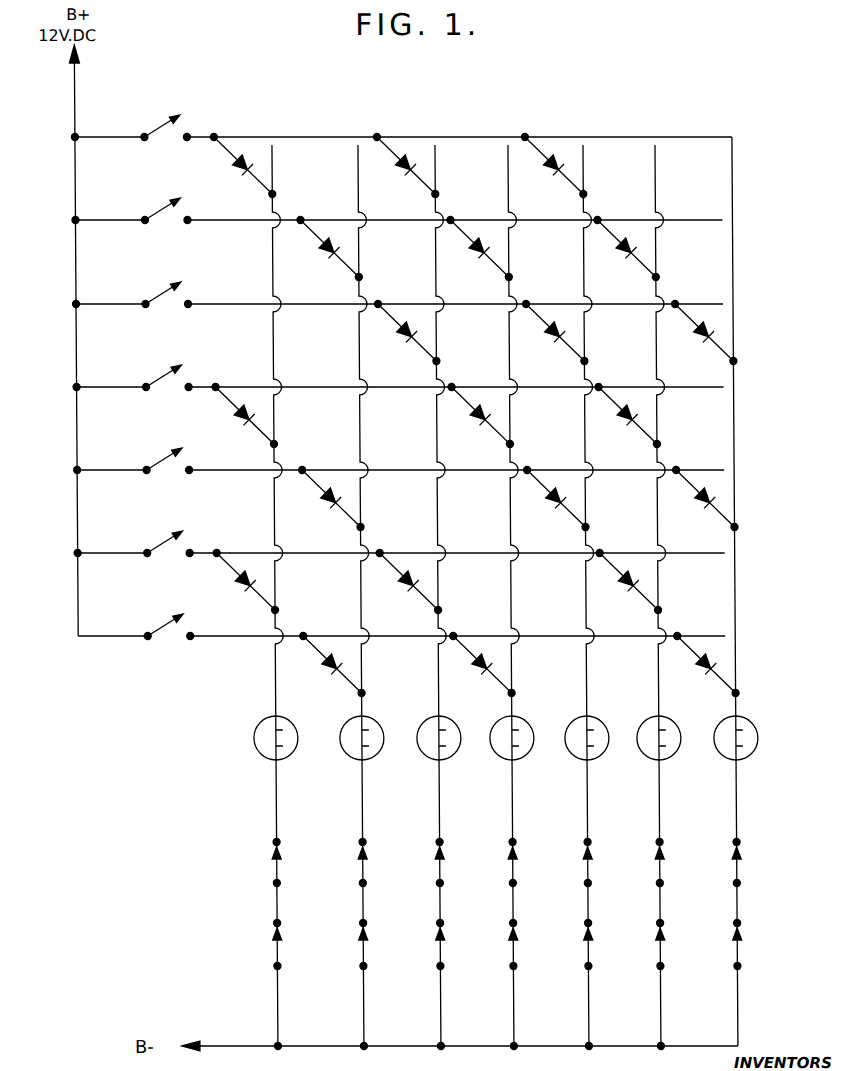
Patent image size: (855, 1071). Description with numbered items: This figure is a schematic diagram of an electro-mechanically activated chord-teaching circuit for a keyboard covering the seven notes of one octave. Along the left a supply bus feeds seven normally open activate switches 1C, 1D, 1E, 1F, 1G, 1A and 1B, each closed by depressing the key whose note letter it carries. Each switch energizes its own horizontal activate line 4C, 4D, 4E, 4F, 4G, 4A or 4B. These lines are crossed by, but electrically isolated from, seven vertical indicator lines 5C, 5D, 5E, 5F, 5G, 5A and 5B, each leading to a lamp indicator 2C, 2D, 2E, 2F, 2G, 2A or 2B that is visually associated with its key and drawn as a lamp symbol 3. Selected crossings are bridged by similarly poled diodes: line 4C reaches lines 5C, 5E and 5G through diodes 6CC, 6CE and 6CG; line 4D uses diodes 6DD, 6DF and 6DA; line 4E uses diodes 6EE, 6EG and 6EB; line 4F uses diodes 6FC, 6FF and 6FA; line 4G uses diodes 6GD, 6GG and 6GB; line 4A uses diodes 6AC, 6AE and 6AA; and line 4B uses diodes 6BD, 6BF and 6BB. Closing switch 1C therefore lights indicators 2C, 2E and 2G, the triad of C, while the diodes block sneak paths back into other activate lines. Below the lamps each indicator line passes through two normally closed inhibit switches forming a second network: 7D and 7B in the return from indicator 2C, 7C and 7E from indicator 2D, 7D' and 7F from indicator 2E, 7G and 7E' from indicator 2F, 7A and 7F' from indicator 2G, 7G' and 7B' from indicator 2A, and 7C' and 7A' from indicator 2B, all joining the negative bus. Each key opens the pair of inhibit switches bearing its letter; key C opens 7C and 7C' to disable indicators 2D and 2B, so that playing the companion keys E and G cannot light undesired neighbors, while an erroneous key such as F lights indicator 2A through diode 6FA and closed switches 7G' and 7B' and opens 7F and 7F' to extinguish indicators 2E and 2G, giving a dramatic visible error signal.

The activate switch 1C is at (166, 141).
The activate switch 1D is at (166, 224).
The activate switch 1E is at (167, 308).
The activate switch 1F is at (167, 391).
The activate switch 1G is at (168, 474).
The activate switch 1A is at (169, 557).
The activate switch 1B is at (169, 640).
The indicator lamp 2C is at (270, 753).
The indicator lamp 2D is at (348, 758).
The indicator lamp 2E is at (425, 758).
The indicator lamp 2F is at (498, 758).
The indicator lamp 2G is at (573, 758).
The indicator lamp 2A is at (645, 758).
The indicator lamp 2B is at (722, 758).
The lamp filament 3 is at (283, 739).
The activate line 4C is at (694, 137).
The activate line 4D is at (692, 222).
The activate line 4E is at (721, 304).
The activate line 4F is at (705, 389).
The activate line 4G is at (721, 470).
The activate line 4A is at (705, 555).
The activate line 4B is at (721, 636).
The indicator line 5C is at (271, 174).
The indicator line 5D is at (357, 175).
The indicator line 5E is at (434, 174).
The indicator line 5F is at (507, 160).
The indicator line 5G is at (582, 174).
The indicator line 5A is at (654, 158).
The indicator line 5B is at (731, 168).
The diode 6CC is at (232, 166).
The diode 6CE is at (403, 166).
The diode 6CG is at (551, 166).
The diode 6DD is at (321, 249).
The diode 6DF is at (476, 249).
The diode 6DA is at (623, 249).
The diode 6EE is at (404, 333).
The diode 6EG is at (552, 333).
The diode 6EB is at (701, 333).
The diode 6FC is at (234, 416).
The diode 6FF is at (478, 416).
The diode 6FA is at (625, 416).
The diode 6GD is at (323, 499).
The diode 6GG is at (553, 499).
The diode 6GB is at (702, 499).
The diode 6AC is at (235, 582).
The diode 6AE is at (406, 582).
The diode 6AA is at (626, 582).
The diode 6BD is at (324, 665).
The diode 6BF is at (479, 665).
The diode 6BB is at (703, 665).
The inhibit switch 7D is at (293, 863).
The inhibit switch 7B is at (293, 945).
The inhibit switch 7C is at (378, 863).
The inhibit switch 7E is at (379, 945).
The inhibit switch 7D' is at (458, 863).
The inhibit switch 7F is at (455, 945).
The inhibit switch 7G is at (529, 863).
The inhibit switch 7E' is at (531, 945).
The inhibit switch 7A is at (603, 863).
The inhibit switch 7F' is at (606, 945).
The inhibit switch 7G' is at (678, 863).
The inhibit switch 7B' is at (679, 945).
The inhibit switch 7C' is at (755, 863).
The inhibit switch 7A' is at (756, 945).